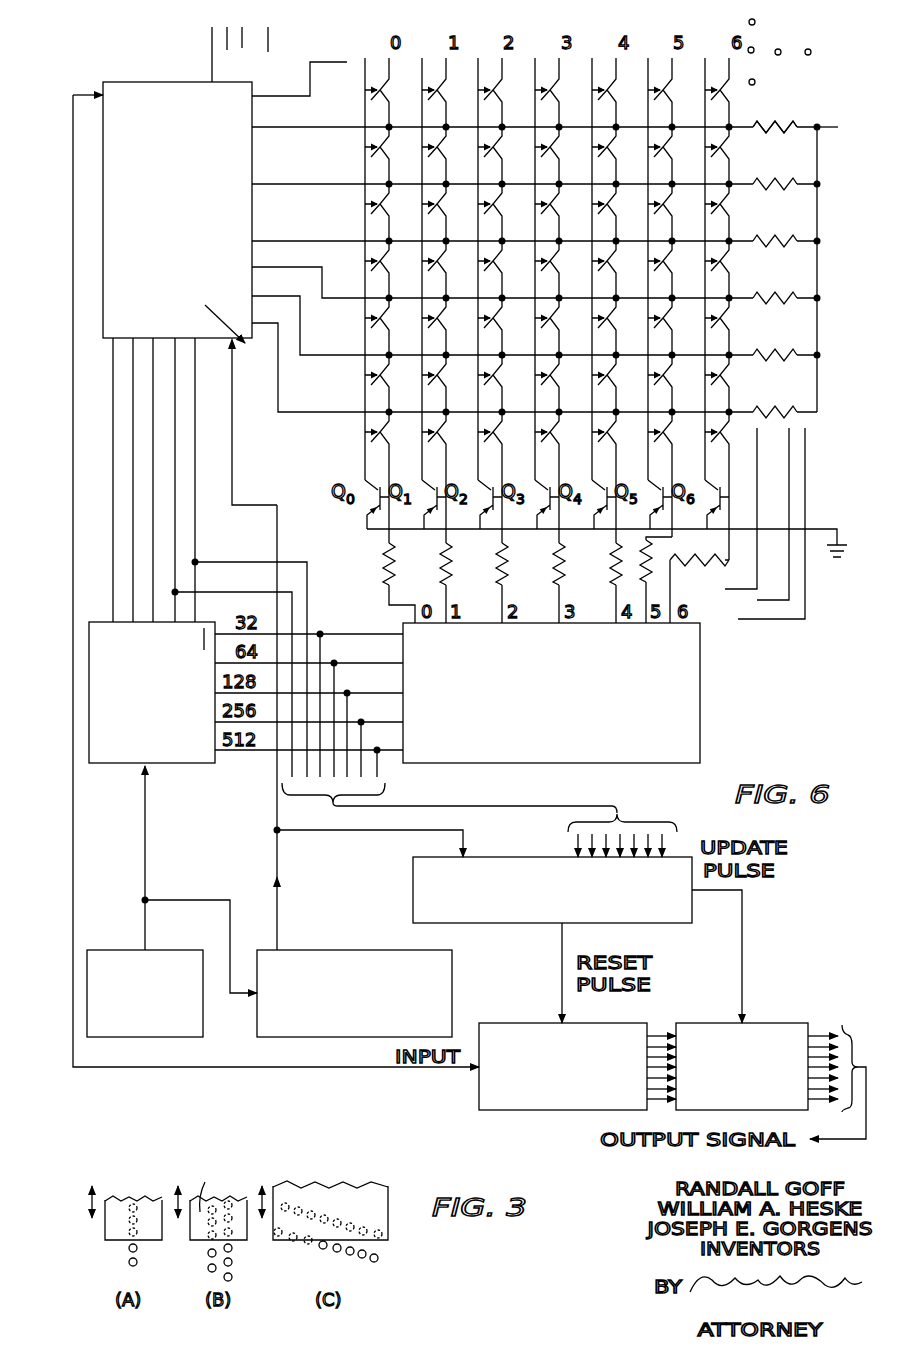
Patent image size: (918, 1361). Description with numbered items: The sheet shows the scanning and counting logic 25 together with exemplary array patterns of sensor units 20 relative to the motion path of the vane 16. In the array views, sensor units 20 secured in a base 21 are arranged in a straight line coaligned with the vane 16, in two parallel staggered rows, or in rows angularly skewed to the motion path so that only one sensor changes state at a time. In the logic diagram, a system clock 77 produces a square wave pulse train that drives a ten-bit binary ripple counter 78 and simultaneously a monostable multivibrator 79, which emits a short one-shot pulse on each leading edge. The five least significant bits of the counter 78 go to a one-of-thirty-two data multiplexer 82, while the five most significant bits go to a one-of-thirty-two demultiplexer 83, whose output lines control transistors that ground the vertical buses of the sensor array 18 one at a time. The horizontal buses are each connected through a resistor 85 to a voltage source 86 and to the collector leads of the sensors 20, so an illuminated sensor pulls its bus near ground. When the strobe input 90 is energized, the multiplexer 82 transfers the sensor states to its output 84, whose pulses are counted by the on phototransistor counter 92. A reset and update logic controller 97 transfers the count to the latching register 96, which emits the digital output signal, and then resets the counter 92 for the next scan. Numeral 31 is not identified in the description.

In FIG. 6, the one of thirty-two data multiplexer 82 is at (117, 90).
In FIG. 6, the multiplexer output 84 is at (73, 128).
In FIG. 6, the strobe input 90 is at (241, 405).
In FIG. 6, the photo sensor element 20 is at (446, 80).
In FIG. 3, the photo sensor element 20 is at (129, 1264).
In FIG. 6, the sensor array 18 is at (606, 76).
In FIG. 6, the additional matrix elements 31 is at (811, 50).
In FIG. 6, the resistor 85 is at (780, 120).
In FIG. 6, the voltage source 86 is at (860, 125).
In FIG. 6, the logic 25 is at (832, 287).
In FIG. 6, the one of thirty-two demultiplexer 83 is at (640, 749).
In FIG. 6, the binary ripple counter 78 is at (180, 752).
In FIG. 6, the system clock 77 is at (133, 960).
In FIG. 6, the monostable multivibrator 79 is at (440, 979).
In FIG. 6, the reset and update logic controller 97 is at (421, 893).
In FIG. 6, the on phototransistor counter 92 is at (520, 1098).
In FIG. 6, the latching register 96 is at (765, 1032).
In FIG. 3, the vane 16 is at (115, 1212).
In FIG. 3, the base 21 is at (206, 1182).